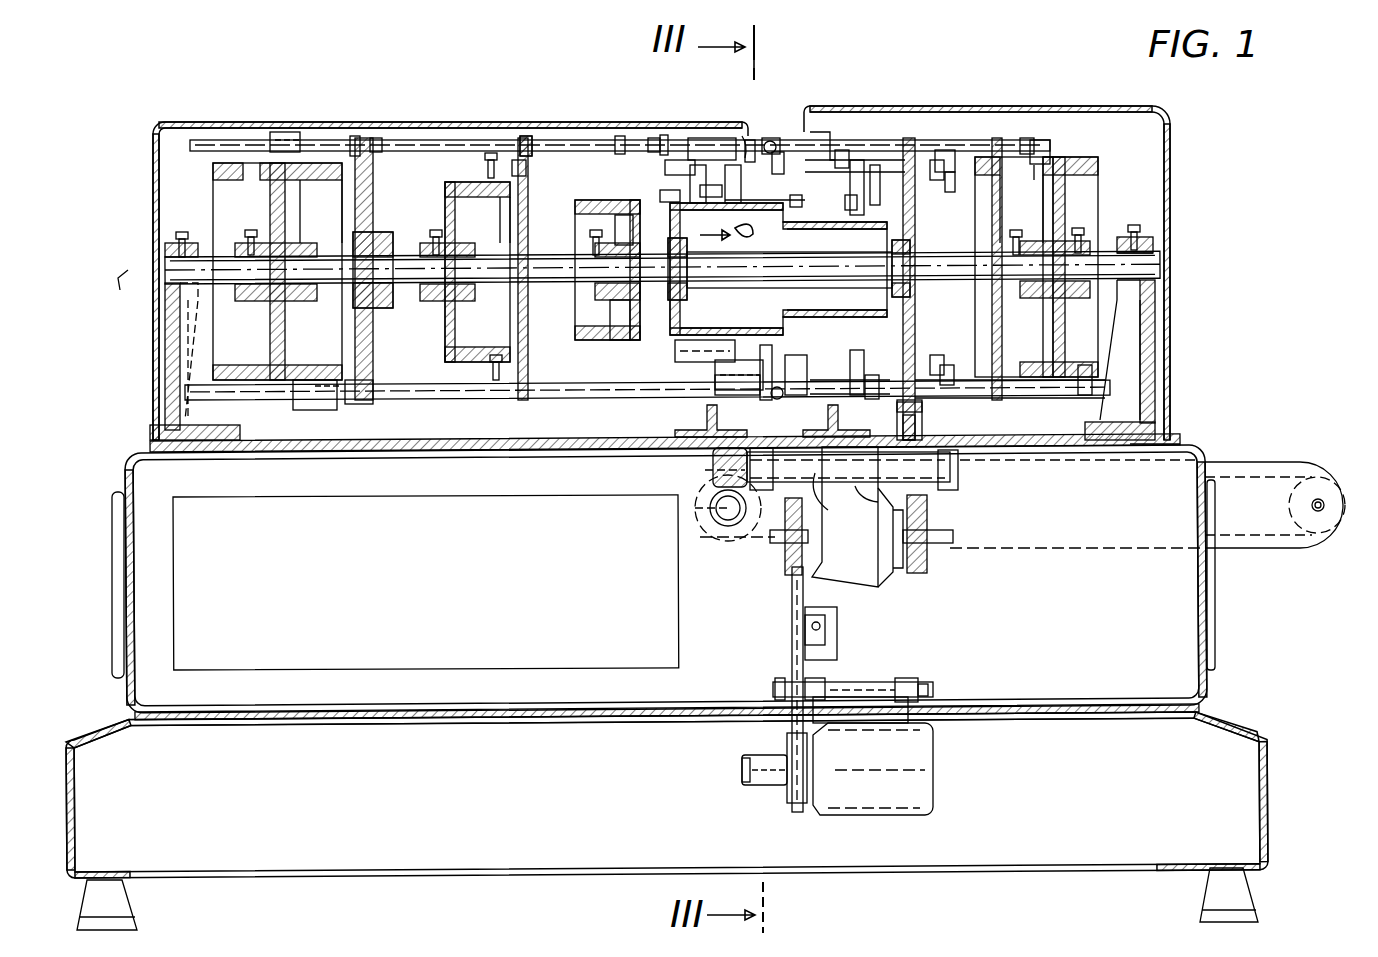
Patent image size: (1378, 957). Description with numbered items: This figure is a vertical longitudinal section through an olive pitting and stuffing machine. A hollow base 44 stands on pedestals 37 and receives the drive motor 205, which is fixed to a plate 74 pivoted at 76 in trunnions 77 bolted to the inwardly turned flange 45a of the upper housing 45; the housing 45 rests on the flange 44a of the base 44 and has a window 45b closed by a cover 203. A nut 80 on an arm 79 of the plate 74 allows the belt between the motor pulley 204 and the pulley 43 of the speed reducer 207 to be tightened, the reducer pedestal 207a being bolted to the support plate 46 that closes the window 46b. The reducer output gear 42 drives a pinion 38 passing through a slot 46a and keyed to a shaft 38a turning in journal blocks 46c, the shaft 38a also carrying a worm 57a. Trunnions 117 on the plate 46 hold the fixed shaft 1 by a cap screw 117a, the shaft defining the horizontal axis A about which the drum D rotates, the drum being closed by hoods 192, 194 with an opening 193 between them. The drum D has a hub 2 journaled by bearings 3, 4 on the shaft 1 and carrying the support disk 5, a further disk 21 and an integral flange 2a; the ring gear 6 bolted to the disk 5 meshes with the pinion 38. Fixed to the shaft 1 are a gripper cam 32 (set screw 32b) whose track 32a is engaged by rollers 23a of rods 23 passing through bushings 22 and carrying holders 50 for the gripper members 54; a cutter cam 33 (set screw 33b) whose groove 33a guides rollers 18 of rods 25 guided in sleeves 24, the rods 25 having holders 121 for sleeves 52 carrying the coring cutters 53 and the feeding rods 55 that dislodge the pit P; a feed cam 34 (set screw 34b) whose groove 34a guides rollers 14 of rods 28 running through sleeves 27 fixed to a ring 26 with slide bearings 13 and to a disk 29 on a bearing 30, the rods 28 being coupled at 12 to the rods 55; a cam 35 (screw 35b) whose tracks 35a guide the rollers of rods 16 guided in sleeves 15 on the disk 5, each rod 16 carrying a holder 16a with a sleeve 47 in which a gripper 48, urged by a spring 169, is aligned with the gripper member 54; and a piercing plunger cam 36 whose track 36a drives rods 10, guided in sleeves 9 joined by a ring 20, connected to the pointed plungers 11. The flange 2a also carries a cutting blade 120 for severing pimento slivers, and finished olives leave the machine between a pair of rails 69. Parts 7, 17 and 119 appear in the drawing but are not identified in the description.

The shaft 1 is at (1160, 270).
The hub 2 is at (690, 322).
The support flange 2a is at (700, 408).
The bearing 3 is at (915, 292).
The bearing 4 is at (668, 247).
The support and guide plate 5 is at (903, 345).
The ring gear 6 is at (920, 417).
The bracket 7 is at (802, 199).
The sleeves 9 is at (990, 400).
The rods 10 is at (1027, 138).
The piercing plungers 11 is at (865, 395).
The coupling 12 is at (622, 134).
The slide bearings 13 is at (353, 138).
The rollers 14 is at (305, 140).
The sleeves 15 is at (873, 168).
The rod 16 is at (935, 158).
The holder 16a is at (830, 172).
The screw 17 is at (522, 176).
The cam-follower rollers 18 is at (475, 155).
The ring 20 is at (997, 138).
The reinforcing ring 21 is at (862, 160).
The axial bushings 22 is at (712, 345).
The rods 23 is at (627, 243).
The rollers 23a is at (610, 336).
The sleeves 24 is at (585, 158).
The rods 25 is at (505, 398).
The ring 26 is at (525, 138).
The sleeves 27 is at (428, 150).
The rods 28 is at (352, 404).
The disk 29 is at (378, 140).
The bearing 30 is at (353, 247).
The gripper member cam 32 is at (588, 318).
The peripheral track 32a is at (605, 215).
The set screw 32b is at (588, 238).
The cutter cam 33 is at (445, 198).
The circumferential groove 33a is at (483, 220).
The set screw 33b is at (432, 236).
The feed cam 34 is at (277, 271).
The peripheral groove 34a is at (319, 211).
The set screw 34b is at (269, 253).
The cam 35 is at (1000, 190).
The closed tracks 35a is at (955, 166).
The screw 35b is at (995, 232).
The piercing plunger cam 36 is at (1083, 160).
The peripheral track 36a is at (1080, 396).
The pedestals 37 is at (1245, 897).
The pinion 38 is at (917, 492).
The shaft 38a is at (835, 496).
The output gear 42 is at (930, 556).
The pulley 43 is at (788, 565).
The hollow base 44 is at (96, 725).
The inwardly turned flange 44a is at (175, 726).
The upper housing 45 is at (125, 465).
The inwardly turned flange 45a is at (162, 714).
The window 45b is at (132, 660).
The support plate 46 is at (150, 443).
The slot 46a is at (925, 440).
The window 46b is at (1150, 452).
The journal block 46c is at (958, 482).
The sleeve 47 is at (800, 375).
The gripper 48 is at (779, 371).
The holders 50 is at (750, 140).
The sleeves 52 is at (700, 160).
The cutters 53 is at (726, 181).
The gripper members 54 is at (775, 138).
The feeding rod 55 is at (655, 136).
The worm 57a is at (712, 466).
The rails 69 is at (1283, 468).
The motor platform 74 is at (858, 700).
The pivot 76 is at (850, 685).
The trunnions 77 is at (918, 688).
The arm 79 is at (838, 645).
The nut 80 is at (808, 615).
The trunnions 117 is at (165, 250).
The cap screw 117a is at (1133, 235).
The lever 119 is at (672, 160).
The cutting blade 120 is at (665, 133).
The holders 121 is at (740, 388).
The spring 169 is at (780, 400).
The removable hood 192 is at (1172, 128).
The opening 193 is at (742, 130).
The removable hood 194 is at (173, 126).
The cover 203 is at (110, 570).
The pulley 204 is at (797, 808).
The drive motor 205 is at (920, 755).
The speed-reducing gear 207 is at (885, 582).
The pedestal 207a is at (860, 488).
The horizontal axis A is at (112, 287).
The drum D is at (326, 416).
The pit P is at (777, 143).